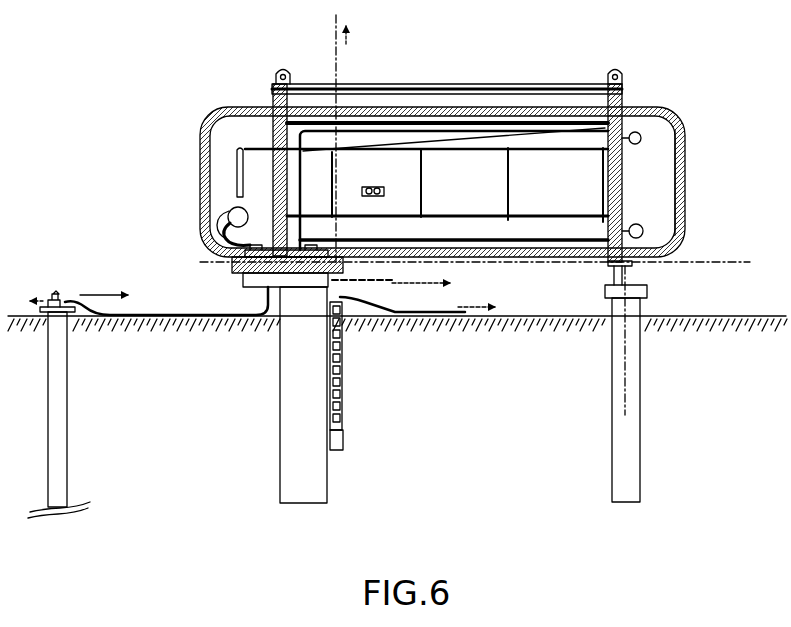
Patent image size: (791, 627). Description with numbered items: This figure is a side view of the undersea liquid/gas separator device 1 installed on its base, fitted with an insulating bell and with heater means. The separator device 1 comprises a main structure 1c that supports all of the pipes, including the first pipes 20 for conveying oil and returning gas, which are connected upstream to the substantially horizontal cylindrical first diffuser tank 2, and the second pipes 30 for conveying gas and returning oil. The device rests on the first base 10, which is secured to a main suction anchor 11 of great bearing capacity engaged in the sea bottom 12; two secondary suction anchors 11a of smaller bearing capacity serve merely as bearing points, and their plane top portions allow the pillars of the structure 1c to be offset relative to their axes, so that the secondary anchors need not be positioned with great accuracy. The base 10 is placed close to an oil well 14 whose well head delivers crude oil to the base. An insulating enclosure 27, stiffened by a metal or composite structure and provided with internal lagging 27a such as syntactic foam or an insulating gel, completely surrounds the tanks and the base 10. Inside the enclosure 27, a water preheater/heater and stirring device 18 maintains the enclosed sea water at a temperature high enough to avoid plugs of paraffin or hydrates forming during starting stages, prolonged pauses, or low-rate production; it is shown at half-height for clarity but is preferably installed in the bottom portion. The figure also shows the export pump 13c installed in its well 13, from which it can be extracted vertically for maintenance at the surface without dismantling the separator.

The undersea liquid/gas separator device 1 is at (513, 159).
The main structure 1c is at (620, 84).
The first diffuser tank 2 is at (228, 210).
The first base 10 is at (242, 279).
The main suction anchor 11 is at (283, 472).
The secondary suction anchor 11a is at (641, 476).
The sea bottom 12 is at (727, 316).
The well 13 is at (344, 440).
The export pump 13c is at (342, 403).
The oil well 14 is at (65, 463).
The water preheater/heater device 18 is at (373, 186).
The first pipes 20 is at (636, 228).
The insulating enclosure 27 is at (678, 110).
The internal lagging 27a is at (686, 139).
The second pipes 30 is at (453, 153).